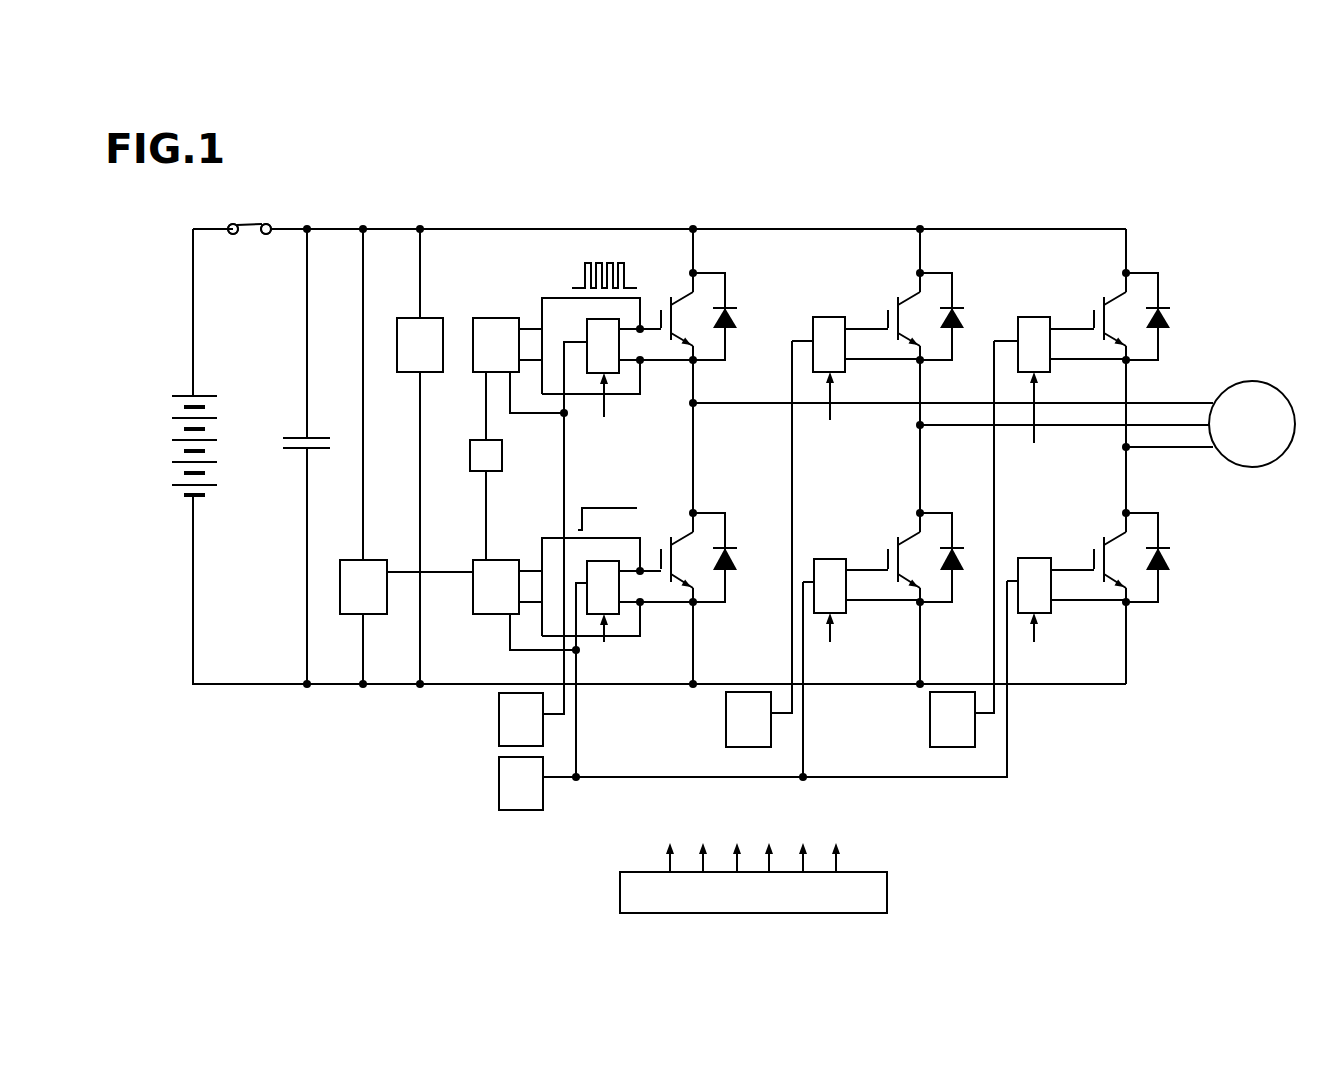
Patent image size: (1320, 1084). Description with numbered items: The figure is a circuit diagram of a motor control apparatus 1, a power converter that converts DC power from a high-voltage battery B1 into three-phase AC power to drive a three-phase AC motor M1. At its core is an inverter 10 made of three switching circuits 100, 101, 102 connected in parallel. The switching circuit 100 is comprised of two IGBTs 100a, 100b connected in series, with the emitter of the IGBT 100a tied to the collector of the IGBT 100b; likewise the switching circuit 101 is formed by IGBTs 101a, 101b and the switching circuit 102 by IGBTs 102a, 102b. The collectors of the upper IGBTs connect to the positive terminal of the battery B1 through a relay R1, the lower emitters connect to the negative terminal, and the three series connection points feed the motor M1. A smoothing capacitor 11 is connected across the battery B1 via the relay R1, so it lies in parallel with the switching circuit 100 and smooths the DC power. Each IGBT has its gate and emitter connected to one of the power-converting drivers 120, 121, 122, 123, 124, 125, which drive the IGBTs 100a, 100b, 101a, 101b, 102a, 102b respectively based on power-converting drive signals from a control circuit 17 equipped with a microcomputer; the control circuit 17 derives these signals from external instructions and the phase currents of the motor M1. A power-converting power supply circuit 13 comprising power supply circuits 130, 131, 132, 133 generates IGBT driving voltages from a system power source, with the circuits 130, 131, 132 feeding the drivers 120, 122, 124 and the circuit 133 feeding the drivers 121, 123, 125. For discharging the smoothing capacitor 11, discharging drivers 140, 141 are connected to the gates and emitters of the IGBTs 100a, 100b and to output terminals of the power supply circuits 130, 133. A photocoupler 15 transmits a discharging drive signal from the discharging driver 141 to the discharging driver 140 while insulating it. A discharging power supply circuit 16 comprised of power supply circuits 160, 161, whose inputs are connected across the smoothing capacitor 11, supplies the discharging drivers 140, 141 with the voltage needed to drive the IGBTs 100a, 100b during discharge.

The motor control apparatus 1 is at (1012, 175).
The inverter 10 is at (822, 197).
The smoothing capacitor 11 is at (293, 437).
The power-converting power supply circuit 13 is at (438, 742).
The photocoupler 15 is at (503, 455).
The discharging power supply circuit 16 is at (388, 200).
The control circuit 17 is at (887, 892).
The switching circuit 100 is at (693, 226).
The IGBT 100a is at (667, 340).
The IGBT 100b is at (667, 580).
The switching circuit 101 is at (920, 226).
The IGBT 101a is at (894, 340).
The IGBT 101b is at (894, 580).
The switching circuit 102 is at (1126, 226).
The IGBT 102a is at (1100, 340).
The IGBT 102b is at (1100, 580).
The power-converting driver 120 is at (596, 328).
The power-converting driver 121 is at (596, 570).
The power-converting driver 122 is at (826, 325).
The power-converting driver 123 is at (828, 567).
The power-converting driver 124 is at (1032, 325).
The power-converting driver 125 is at (1032, 567).
The power supply circuit 130 is at (500, 714).
The power supply circuit 131 is at (733, 727).
The power supply circuit 132 is at (940, 727).
The power supply circuit 133 is at (500, 778).
The discharging driver 140 is at (497, 325).
The discharging driver 141 is at (485, 572).
The power supply circuit 160 is at (403, 327).
The power supply circuit 161 is at (348, 572).
The high-voltage battery B1 is at (180, 394).
The relay R1 is at (250, 222).
The three-phase AC motor M1 is at (1251, 385).